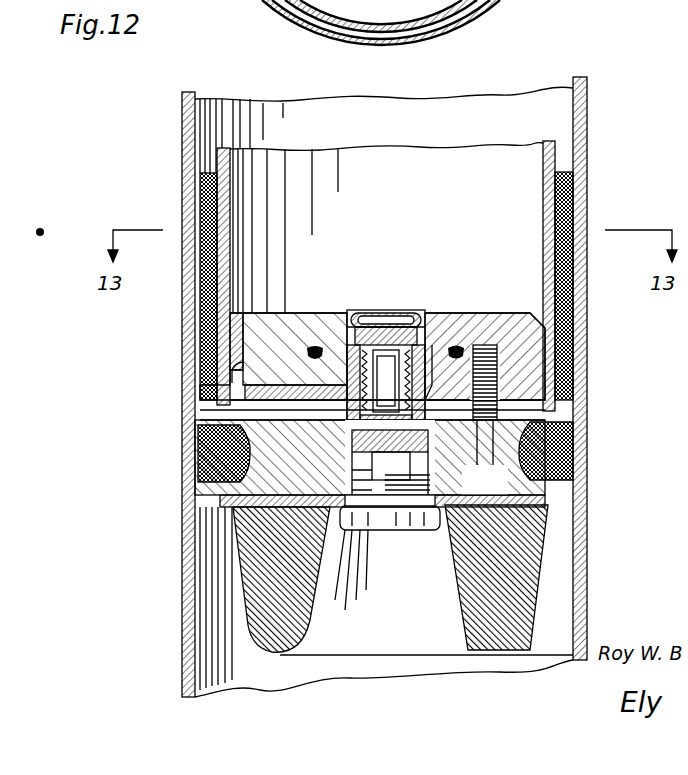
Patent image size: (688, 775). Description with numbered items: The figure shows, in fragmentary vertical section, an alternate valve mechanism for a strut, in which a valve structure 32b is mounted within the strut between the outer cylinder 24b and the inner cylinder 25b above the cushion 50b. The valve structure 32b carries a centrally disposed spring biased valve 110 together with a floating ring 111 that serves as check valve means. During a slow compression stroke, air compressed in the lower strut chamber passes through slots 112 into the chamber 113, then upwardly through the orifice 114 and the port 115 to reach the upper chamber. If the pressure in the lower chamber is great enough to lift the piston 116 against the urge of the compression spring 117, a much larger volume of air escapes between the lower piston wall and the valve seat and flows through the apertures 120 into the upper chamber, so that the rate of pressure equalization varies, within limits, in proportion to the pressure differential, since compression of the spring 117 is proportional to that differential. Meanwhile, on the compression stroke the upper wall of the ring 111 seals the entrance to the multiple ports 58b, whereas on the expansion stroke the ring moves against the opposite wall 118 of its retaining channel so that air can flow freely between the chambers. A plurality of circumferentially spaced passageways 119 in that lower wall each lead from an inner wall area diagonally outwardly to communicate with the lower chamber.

The outer cylinder 24b is at (587, 90).
The inner cylinder 25b is at (555, 145).
The valve structure 32b is at (432, 300).
The spring biased valve 110 is at (378, 305).
The compression spring 117 is at (347, 368).
The port 115 is at (446, 356).
The piston 116 is at (455, 348).
The multiple ports 58b is at (242, 374).
The apertures 120 is at (318, 394).
The floating ring 111 is at (573, 443).
The opposite wall 118 is at (232, 484).
The passageways 119 is at (228, 498).
The orifice 114 is at (391, 462).
The slots 112 is at (378, 520).
The chamber 113 is at (430, 512).
The rubber cushion 50b is at (540, 585).